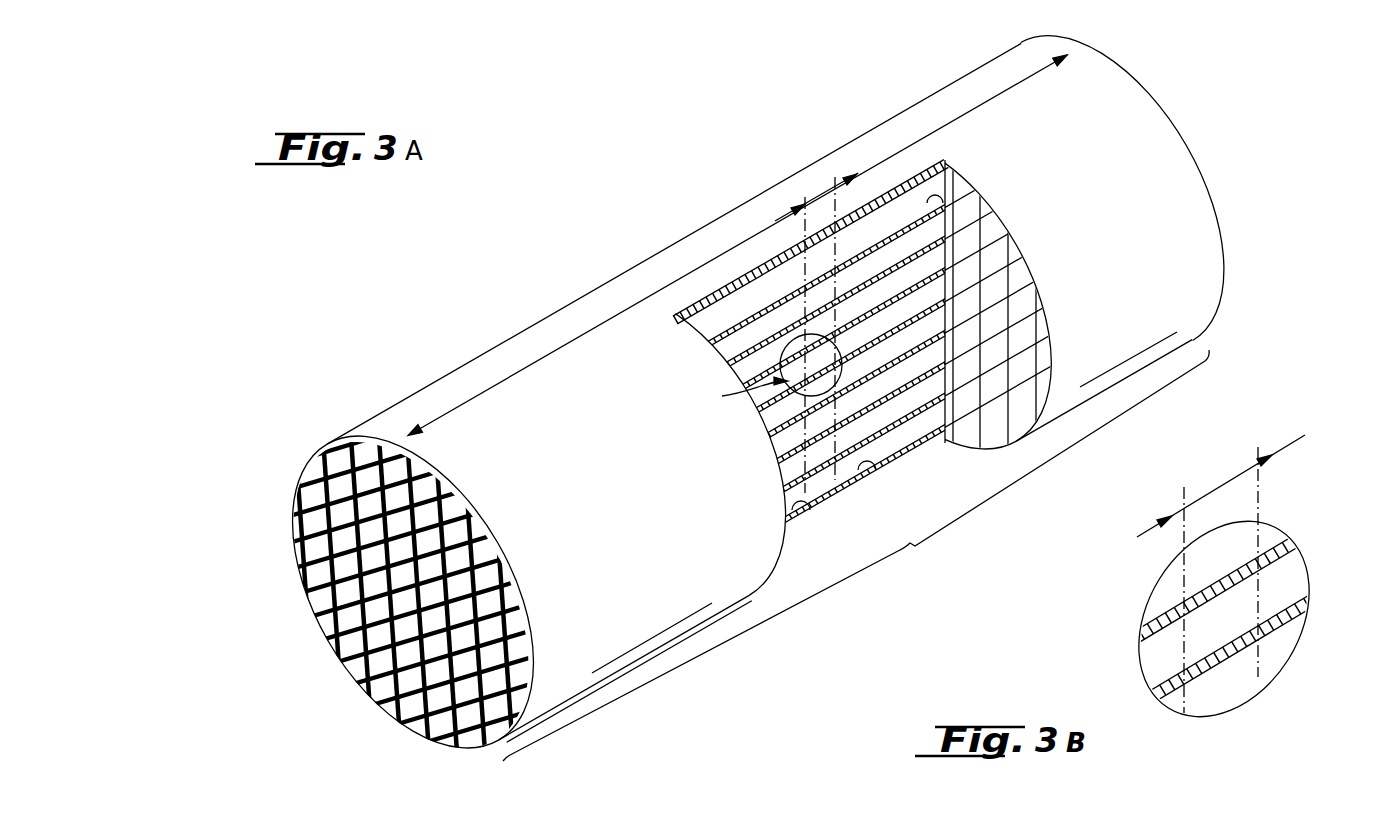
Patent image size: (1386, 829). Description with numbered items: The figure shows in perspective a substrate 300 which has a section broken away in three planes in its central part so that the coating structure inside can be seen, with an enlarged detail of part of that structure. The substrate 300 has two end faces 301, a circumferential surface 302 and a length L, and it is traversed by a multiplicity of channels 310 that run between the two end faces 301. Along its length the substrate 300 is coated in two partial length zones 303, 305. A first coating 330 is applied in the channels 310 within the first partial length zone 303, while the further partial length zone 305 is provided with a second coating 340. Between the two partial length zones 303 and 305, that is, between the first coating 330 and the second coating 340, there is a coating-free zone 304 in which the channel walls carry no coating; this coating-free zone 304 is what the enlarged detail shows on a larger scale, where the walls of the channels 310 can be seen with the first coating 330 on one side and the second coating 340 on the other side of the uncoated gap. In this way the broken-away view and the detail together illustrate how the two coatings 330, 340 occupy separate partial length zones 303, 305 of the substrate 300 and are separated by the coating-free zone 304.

In FIG. 3A, the substrate 300 is at (413, 391).
In FIG. 3B, the substrate 300 is at (1246, 707).
In FIG. 3A, the end faces 301 is at (1123, 64).
In FIG. 3A, the circumferential surface 302 is at (1178, 252).
In FIG. 3A, the first partial length zone 303 is at (649, 297).
In FIG. 3A, the coating-free zone 304 is at (817, 192).
In FIG. 3B, the coating-free zone 304 is at (1222, 487).
In FIG. 3A, the further partial length zone 305 is at (963, 98).
In FIG. 3A, the channels 310 is at (895, 320).
In FIG. 3B, the channels 310 is at (1222, 627).
In FIG. 3A, the first coating 330 is at (700, 340).
In FIG. 3B, the first coating 330 is at (1158, 597).
In FIG. 3A, the second coating 340 is at (938, 198).
In FIG. 3B, the second coating 340 is at (1273, 532).